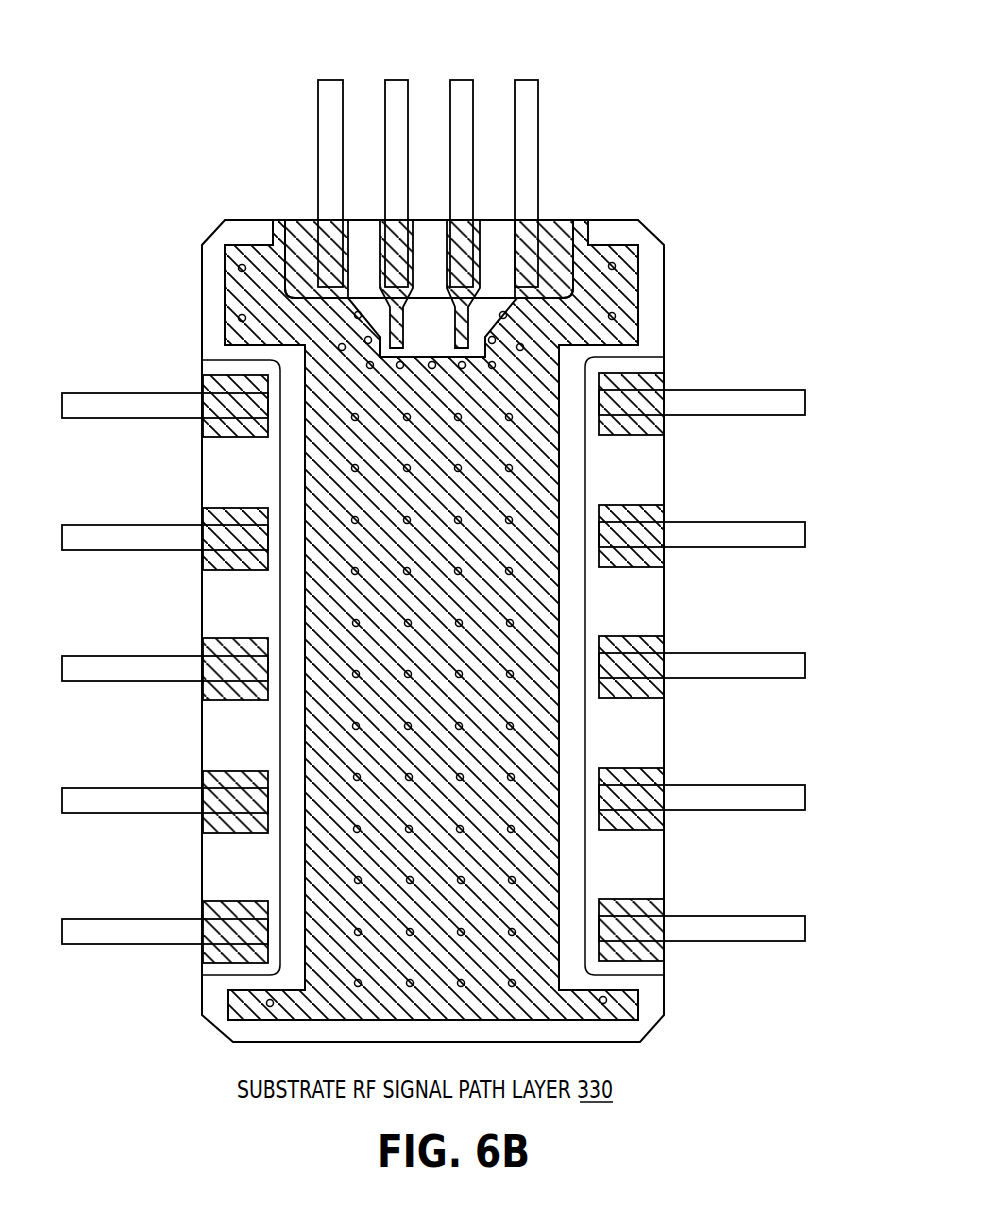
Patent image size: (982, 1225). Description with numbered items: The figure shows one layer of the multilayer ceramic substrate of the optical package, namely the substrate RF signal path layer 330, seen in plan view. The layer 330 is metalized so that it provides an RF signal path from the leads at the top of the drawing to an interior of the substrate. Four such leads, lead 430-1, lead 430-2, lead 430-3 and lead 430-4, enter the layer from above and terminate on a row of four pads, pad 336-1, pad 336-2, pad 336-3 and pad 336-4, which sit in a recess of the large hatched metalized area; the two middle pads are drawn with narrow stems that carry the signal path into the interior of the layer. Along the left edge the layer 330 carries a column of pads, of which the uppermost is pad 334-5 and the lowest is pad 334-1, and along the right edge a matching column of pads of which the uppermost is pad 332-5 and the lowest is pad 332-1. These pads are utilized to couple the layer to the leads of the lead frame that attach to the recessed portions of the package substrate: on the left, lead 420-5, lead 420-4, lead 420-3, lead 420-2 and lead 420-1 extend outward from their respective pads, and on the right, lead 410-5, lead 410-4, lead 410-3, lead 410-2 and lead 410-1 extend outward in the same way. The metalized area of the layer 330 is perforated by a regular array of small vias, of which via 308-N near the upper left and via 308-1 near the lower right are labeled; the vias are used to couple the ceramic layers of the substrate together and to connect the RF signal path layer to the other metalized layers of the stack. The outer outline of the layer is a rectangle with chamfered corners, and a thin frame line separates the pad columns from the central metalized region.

The RF signal path layer 330 is at (632, 292).
The via 308-N is at (240, 268).
The via 308-1 is at (608, 997).
The pad 336-1 is at (528, 232).
The pad 336-2 is at (463, 284).
The pad 336-3 is at (396, 284).
The pad 336-4 is at (345, 221).
The lead 430-1 is at (327, 79).
The lead 430-2 is at (400, 79).
The lead 430-3 is at (466, 79).
The lead 430-4 is at (533, 79).
The pad 334-5 is at (203, 378).
The pad 334-1 is at (203, 902).
The pad 332-5 is at (605, 376).
The pad 332-1 is at (665, 903).
The lead 420-5 is at (105, 393).
The lead 420-4 is at (105, 525).
The lead 420-3 is at (105, 656).
The lead 420-2 is at (105, 788).
The lead 420-1 is at (105, 919).
The lead 410-5 is at (767, 390).
The lead 410-4 is at (767, 522).
The lead 410-3 is at (767, 653).
The lead 410-2 is at (760, 785).
The lead 410-1 is at (760, 916).